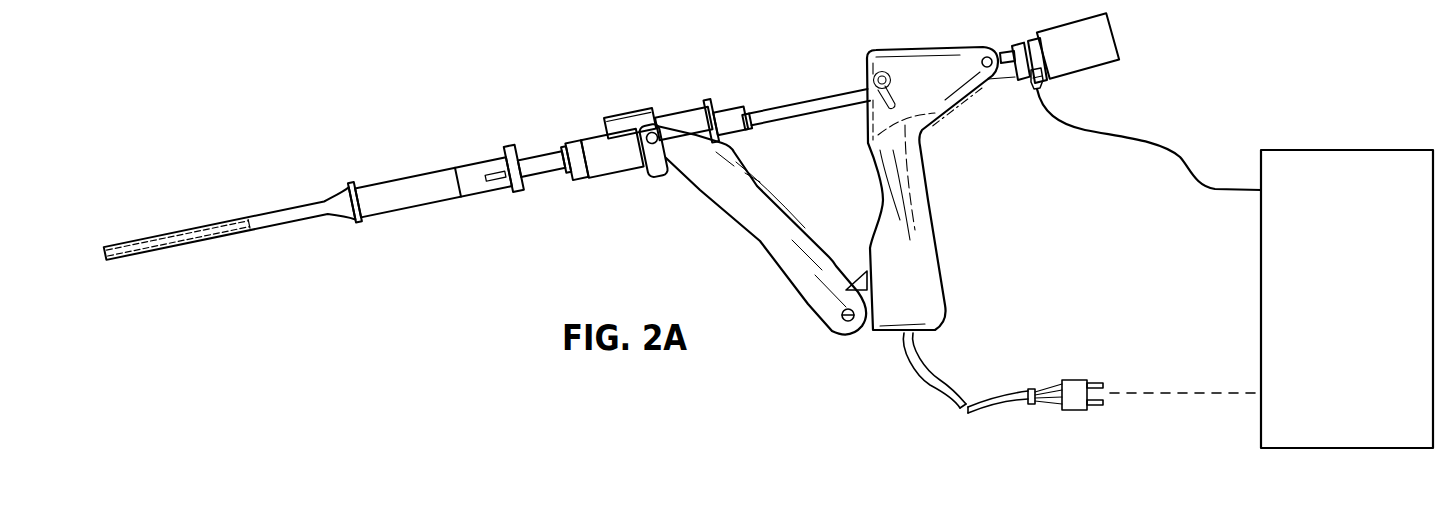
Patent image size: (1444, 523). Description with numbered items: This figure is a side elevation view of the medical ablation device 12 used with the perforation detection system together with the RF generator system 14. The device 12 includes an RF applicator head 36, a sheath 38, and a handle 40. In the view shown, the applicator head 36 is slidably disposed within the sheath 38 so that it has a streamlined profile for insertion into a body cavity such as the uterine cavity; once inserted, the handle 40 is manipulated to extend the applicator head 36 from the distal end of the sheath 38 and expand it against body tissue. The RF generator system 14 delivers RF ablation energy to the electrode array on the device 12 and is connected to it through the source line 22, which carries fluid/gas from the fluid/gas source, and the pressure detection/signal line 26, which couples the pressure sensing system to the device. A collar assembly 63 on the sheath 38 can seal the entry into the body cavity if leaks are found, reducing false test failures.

The medical ablation device 12 is at (228, 104).
The RF generator system 14 is at (1364, 297).
The source line 22 is at (1103, 128).
The pressure detection/signal line 26 is at (1149, 139).
The RF applicator head 36 is at (178, 238).
The sheath 38 is at (231, 227).
The handle 40 is at (975, 267).
The collar assembly 63 is at (433, 187).